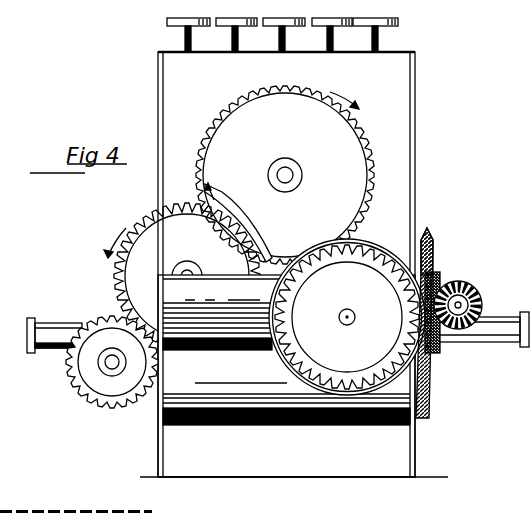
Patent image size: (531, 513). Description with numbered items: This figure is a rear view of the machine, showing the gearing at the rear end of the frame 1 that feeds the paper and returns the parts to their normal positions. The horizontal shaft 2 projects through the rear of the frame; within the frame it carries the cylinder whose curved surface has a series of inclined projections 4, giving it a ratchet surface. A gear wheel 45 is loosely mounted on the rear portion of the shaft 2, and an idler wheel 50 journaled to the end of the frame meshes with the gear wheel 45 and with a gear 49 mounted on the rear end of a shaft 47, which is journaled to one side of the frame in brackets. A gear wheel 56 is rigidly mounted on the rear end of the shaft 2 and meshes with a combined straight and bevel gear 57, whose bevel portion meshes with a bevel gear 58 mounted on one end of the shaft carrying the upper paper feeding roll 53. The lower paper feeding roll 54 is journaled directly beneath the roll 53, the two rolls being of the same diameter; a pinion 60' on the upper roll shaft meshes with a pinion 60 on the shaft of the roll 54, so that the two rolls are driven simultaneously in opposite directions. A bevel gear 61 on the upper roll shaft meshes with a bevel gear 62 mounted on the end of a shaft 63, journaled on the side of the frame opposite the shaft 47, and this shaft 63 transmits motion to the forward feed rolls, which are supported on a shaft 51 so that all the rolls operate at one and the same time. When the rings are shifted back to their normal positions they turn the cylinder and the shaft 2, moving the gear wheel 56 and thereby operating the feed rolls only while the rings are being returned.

The housing frame 1 is at (414, 182).
The horizontal shaft 2 is at (288, 177).
The inclined projections 4 is at (522, 173).
The gear wheel 45 is at (221, 220).
The shaft 47 is at (100, 361).
The gear 49 is at (105, 387).
The idler wheel 50 is at (182, 276).
The shaft 51 is at (278, 337).
The upper paper feeding roll 53 is at (253, 317).
The lower paper feeding roll 54 is at (286, 376).
The gear wheel 56 is at (285, 175).
The combined straight and bevel gear 57 is at (347, 317).
The bevel gear 58 is at (436, 258).
The pinion 60 is at (439, 323).
The pinion 60' is at (439, 251).
The bevel gear 61 is at (438, 345).
The bevel gear 62 is at (462, 302).
The shaft 63 is at (471, 291).